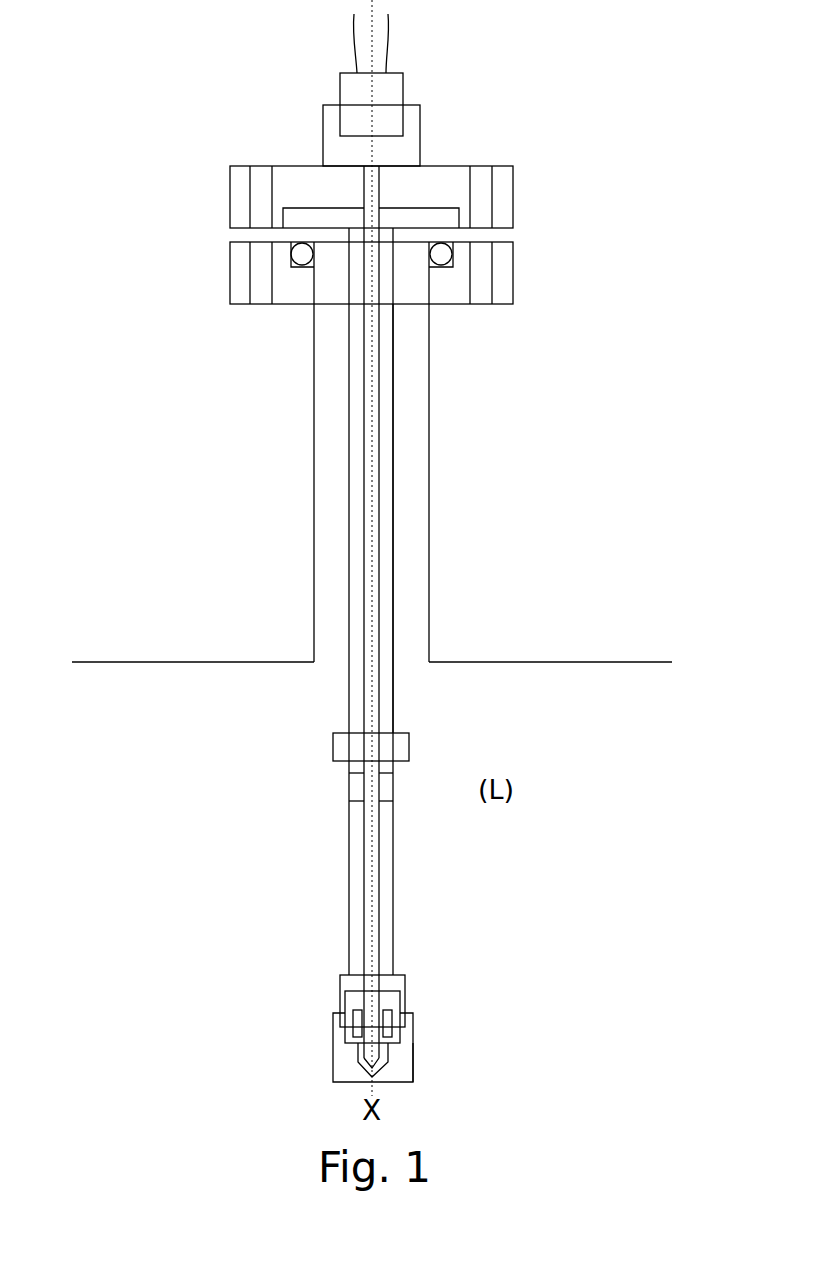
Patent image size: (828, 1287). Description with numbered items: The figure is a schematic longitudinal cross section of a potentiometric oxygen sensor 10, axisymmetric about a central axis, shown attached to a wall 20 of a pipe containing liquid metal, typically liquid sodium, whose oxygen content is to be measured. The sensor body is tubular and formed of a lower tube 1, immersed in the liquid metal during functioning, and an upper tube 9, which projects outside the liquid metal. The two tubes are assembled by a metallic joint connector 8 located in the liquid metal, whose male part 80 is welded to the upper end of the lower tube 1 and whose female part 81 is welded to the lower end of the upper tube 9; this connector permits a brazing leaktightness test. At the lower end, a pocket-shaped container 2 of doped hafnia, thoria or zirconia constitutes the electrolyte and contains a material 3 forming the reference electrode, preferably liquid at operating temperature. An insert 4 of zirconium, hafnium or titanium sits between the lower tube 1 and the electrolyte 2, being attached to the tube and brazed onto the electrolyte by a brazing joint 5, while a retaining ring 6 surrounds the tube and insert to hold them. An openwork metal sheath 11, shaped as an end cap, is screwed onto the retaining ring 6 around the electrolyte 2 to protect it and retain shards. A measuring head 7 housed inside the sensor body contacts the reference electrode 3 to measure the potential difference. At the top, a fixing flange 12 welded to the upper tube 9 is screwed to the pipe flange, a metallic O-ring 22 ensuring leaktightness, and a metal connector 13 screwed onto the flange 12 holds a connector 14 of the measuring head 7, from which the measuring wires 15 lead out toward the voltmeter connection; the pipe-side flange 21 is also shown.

The lower tube 1 is at (352, 888).
The container 2 is at (346, 1065).
The material forming a reference electrode 3 is at (405, 1064).
The insert 4 is at (385, 1000).
The brazing joint 5 is at (355, 1039).
The retaining ring 6 is at (340, 986).
The measuring head 7 is at (378, 435).
The metallic joint connector 8 is at (235, 745).
The upper tube 9 is at (387, 519).
The potentiometric oxygen sensor 10 is at (200, 833).
The openwork metal sheath 11 is at (400, 1048).
The fixing flange 12 is at (242, 196).
The metal connector 13 is at (405, 150).
The connector of the measuring head 14 is at (392, 88).
The connection wires 15 is at (389, 46).
The wall of a pipe 20 is at (314, 480).
The lower flange 21 is at (242, 271).
The metallic O-ring 22 is at (445, 255).
The male part 80 is at (355, 788).
The female part 81 is at (343, 743).